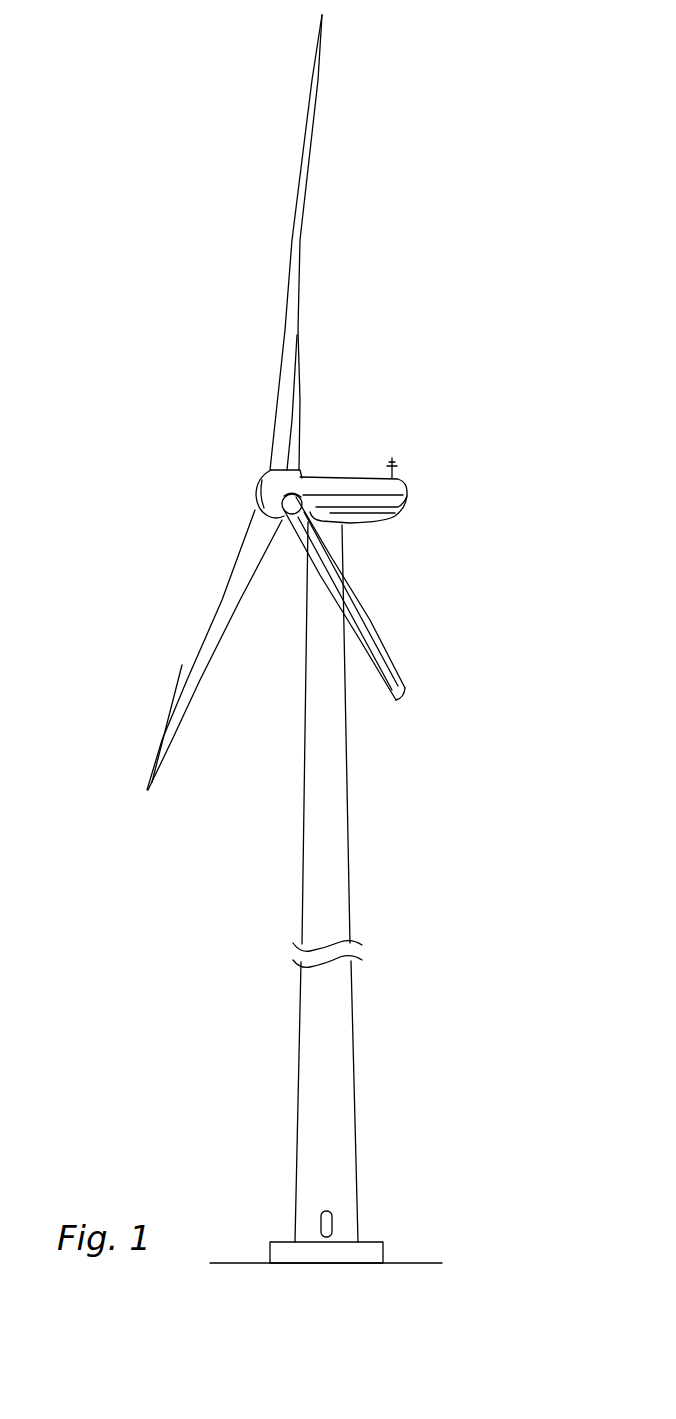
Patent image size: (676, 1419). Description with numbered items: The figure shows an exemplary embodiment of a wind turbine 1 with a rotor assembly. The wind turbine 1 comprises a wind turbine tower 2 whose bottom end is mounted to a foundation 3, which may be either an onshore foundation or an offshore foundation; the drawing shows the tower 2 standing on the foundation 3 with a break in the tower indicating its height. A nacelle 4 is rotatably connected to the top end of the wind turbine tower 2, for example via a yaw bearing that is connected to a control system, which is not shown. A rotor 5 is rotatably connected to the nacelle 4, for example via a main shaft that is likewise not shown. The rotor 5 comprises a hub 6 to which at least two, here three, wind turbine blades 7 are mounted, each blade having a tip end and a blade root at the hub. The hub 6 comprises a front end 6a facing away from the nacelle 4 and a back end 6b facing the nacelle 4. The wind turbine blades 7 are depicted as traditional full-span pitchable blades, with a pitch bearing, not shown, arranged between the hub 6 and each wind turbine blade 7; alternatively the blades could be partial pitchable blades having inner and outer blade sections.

The wind turbine 1 is at (470, 803).
The wind turbine tower 2 is at (345, 1047).
The foundation 3 is at (373, 1257).
The nacelle 4 is at (402, 486).
The rotor 5 is at (203, 478).
The hub 6 is at (307, 470).
The front end 6a is at (245, 492).
The hub rear portion 6b is at (320, 470).
The wind turbine blades 7 is at (290, 333).